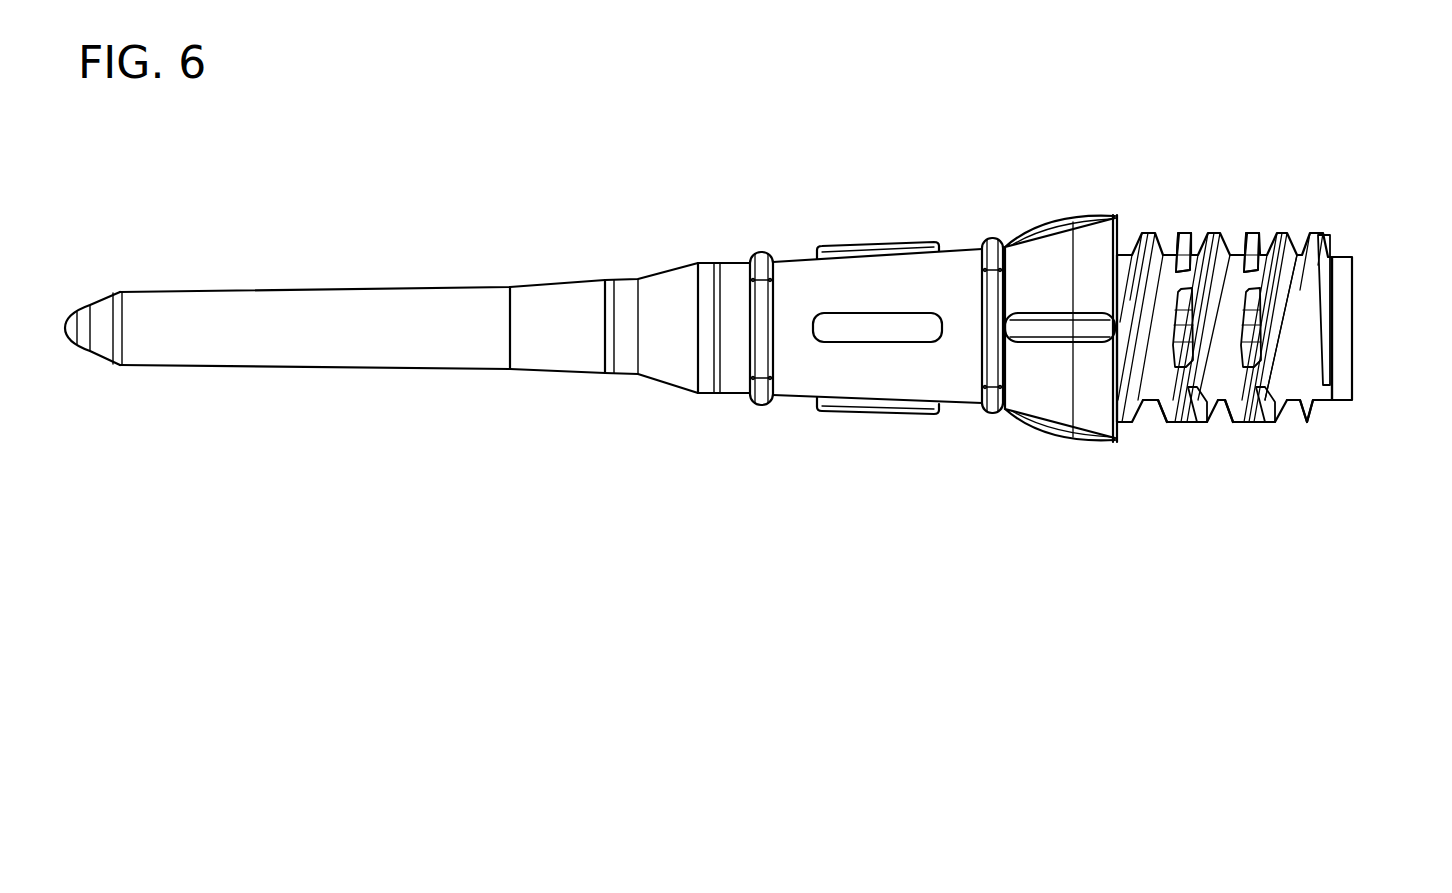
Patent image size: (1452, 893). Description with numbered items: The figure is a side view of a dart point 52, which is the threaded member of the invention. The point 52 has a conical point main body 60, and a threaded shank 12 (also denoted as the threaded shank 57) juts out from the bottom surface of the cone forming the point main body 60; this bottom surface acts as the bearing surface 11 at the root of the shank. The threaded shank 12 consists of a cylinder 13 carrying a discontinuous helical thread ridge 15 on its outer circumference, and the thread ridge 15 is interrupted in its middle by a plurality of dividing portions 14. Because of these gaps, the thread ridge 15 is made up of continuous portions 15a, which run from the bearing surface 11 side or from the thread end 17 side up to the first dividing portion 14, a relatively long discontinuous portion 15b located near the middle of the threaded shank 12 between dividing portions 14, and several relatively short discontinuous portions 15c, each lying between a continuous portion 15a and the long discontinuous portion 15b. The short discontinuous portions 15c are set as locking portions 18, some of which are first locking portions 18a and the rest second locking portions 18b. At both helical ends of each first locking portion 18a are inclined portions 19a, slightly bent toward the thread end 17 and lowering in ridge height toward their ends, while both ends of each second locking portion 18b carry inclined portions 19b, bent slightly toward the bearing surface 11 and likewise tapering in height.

The point 52 is at (699, 156).
The point main body 60 is at (797, 277).
The bearing surface 11 is at (1120, 437).
The threaded shank 12 is at (1372, 497).
The threaded shank 57 is at (1236, 417).
The cylinder 13 is at (1330, 405).
The dividing portion 14 is at (1252, 278).
The thread ridge 15 is at (1295, 422).
The continuous portion 15a is at (1162, 422).
The long discontinuous portion 15b is at (1227, 422).
The short discontinuous portion 15c is at (1200, 422).
The thread end 17 is at (1352, 345).
The locking portion 18 is at (1303, 116).
The first locking portion 18a is at (1183, 240).
The second locking portion 18b is at (1182, 320).
The inclined portion 19a is at (1182, 250).
The inclined portion 19b is at (1182, 300).